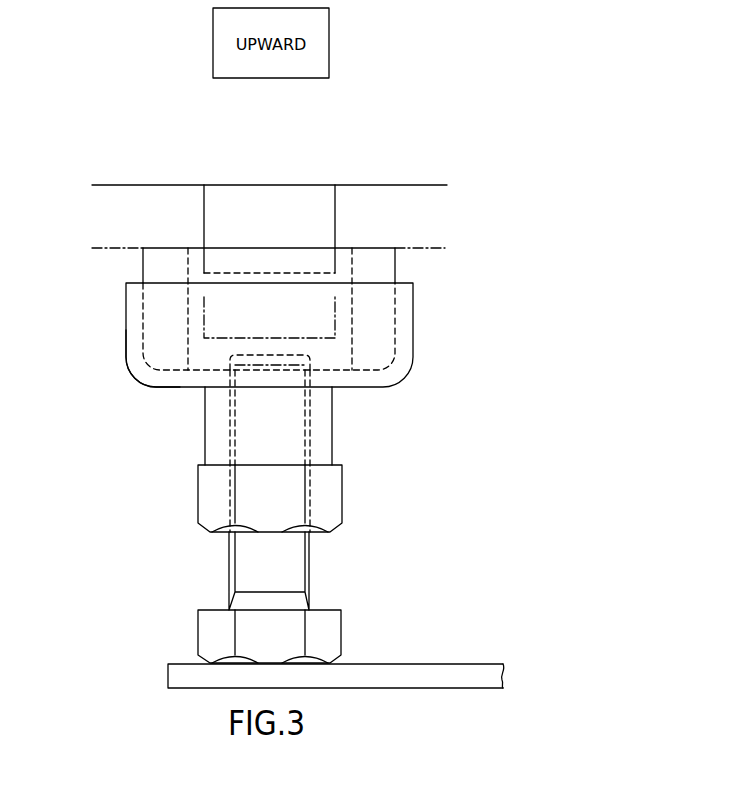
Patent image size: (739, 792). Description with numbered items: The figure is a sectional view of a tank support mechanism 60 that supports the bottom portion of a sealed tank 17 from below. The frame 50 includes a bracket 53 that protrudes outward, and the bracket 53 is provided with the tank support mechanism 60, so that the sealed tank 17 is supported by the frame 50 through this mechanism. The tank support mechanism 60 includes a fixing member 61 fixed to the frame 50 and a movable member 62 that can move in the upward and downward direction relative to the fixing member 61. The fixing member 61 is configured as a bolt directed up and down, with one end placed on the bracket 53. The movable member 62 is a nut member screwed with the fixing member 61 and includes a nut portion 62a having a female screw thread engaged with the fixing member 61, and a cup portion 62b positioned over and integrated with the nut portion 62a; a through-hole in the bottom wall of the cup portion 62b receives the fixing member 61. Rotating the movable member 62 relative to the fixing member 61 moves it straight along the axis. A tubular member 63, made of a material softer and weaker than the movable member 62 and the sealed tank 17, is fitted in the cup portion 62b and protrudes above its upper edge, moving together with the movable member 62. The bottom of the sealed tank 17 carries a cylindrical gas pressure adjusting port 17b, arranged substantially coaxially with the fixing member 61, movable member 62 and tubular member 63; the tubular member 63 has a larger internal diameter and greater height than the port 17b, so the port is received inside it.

The sealed tank 17 is at (430, 185).
The gas pressure adjusting port 17b is at (335, 321).
The frame 50 is at (502, 669).
The bracket 53 is at (183, 663).
The tank support mechanism 60 is at (437, 392).
The fixing member 61 is at (198, 638).
The movable member 62 is at (131, 383).
The nut portion 62a is at (198, 497).
The cup portion 62b is at (126, 335).
The tubular member 63 is at (143, 265).